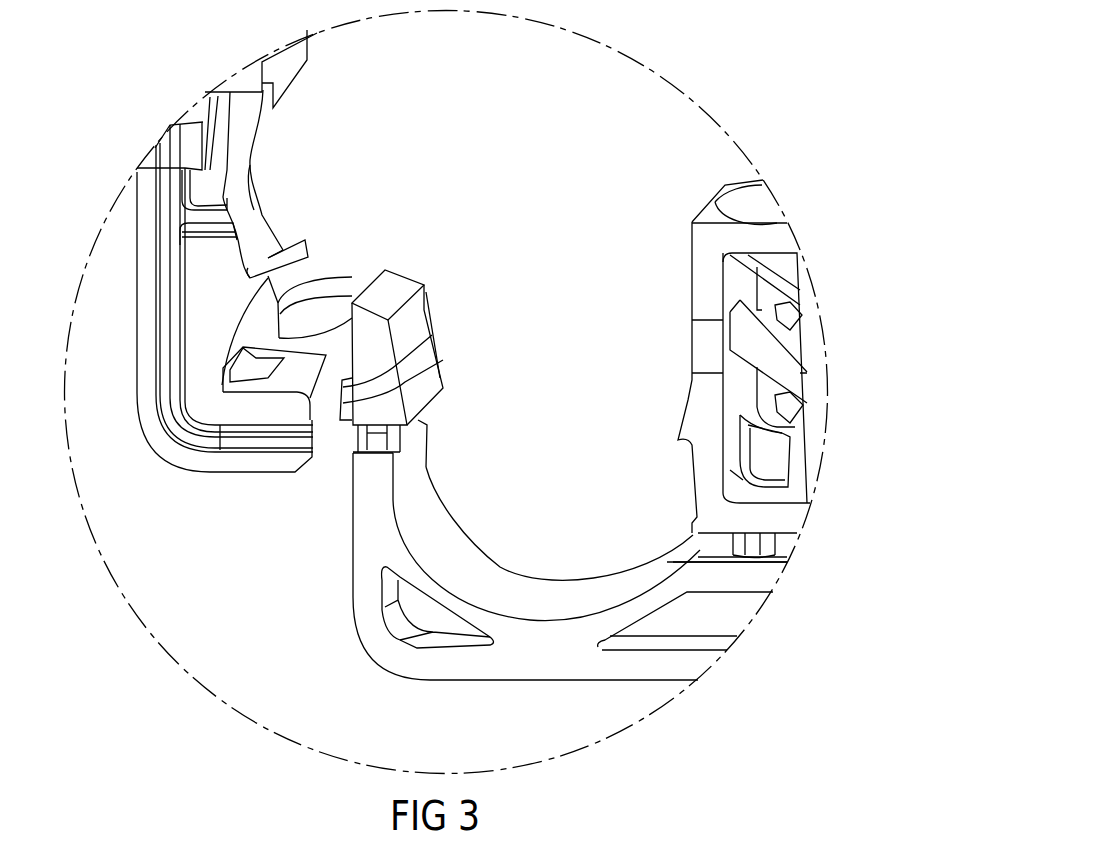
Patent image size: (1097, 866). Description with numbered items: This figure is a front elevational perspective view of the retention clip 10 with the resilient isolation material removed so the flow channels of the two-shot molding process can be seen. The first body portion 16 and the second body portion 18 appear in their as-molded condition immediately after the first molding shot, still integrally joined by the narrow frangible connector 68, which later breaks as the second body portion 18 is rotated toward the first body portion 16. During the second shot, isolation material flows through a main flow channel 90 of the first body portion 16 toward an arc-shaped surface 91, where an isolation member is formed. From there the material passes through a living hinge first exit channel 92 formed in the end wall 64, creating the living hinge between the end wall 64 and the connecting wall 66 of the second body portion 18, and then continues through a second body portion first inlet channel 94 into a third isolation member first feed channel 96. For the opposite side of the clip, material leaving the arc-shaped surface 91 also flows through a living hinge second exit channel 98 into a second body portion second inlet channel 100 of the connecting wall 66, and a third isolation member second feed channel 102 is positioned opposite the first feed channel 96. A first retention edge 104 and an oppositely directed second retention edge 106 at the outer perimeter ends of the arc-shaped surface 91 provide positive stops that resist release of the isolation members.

The retention clip 10 is at (700, 91).
The first body portion 16 is at (387, 650).
The second body portion 18 is at (140, 393).
The end wall 64 is at (373, 532).
The connecting wall 66 is at (237, 470).
The frangible connector 68 is at (425, 327).
The main flow channel 90 is at (688, 533).
The arc-shaped surface 91 is at (470, 548).
The living hinge first exit channel 92 is at (365, 438).
The second body portion first inlet channel 94 is at (163, 318).
The third isolation member first feed channel 96 is at (213, 218).
The living hinge second exit channel 98 is at (428, 420).
The second body portion second inlet channel 100 is at (343, 387).
The third isolation member second feed channel 102 is at (256, 185).
The first retention edge 104 is at (676, 438).
The second retention edge 106 is at (446, 387).